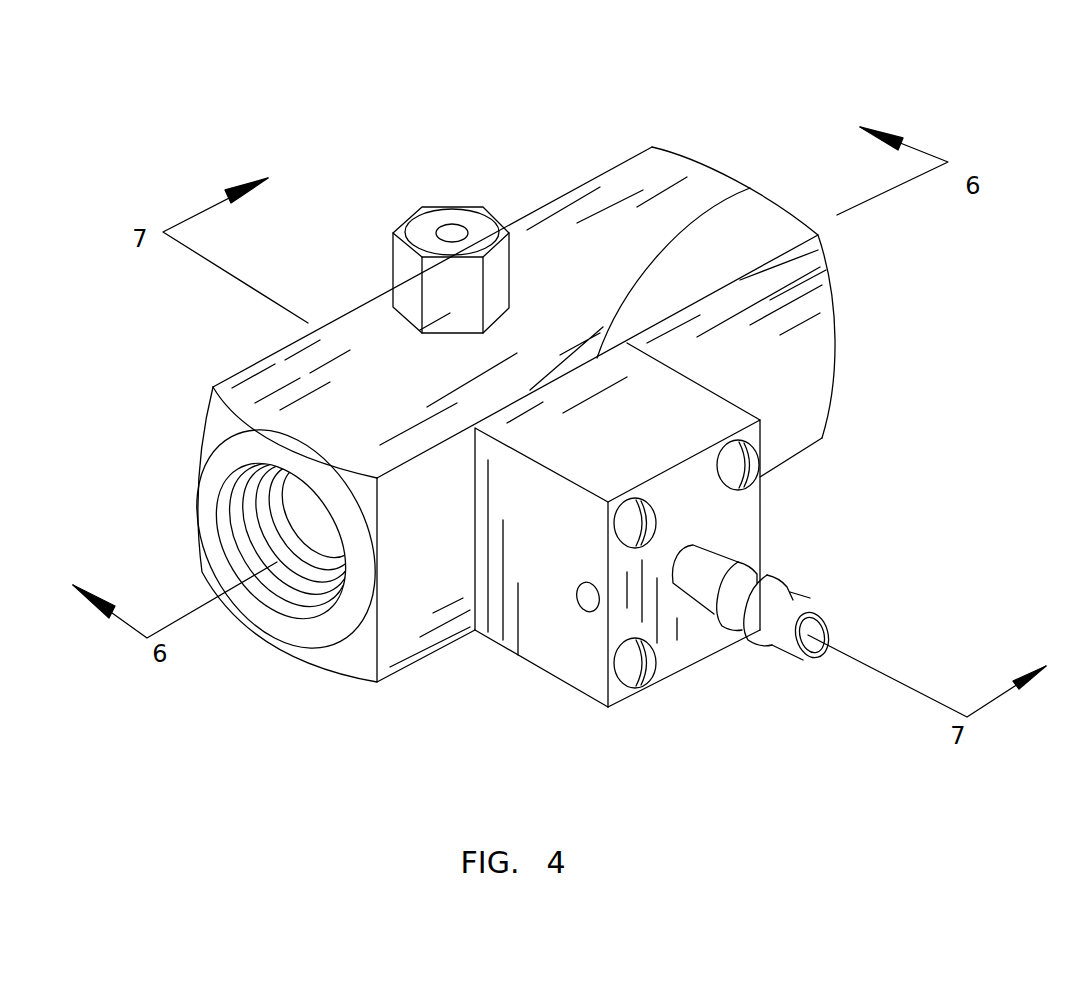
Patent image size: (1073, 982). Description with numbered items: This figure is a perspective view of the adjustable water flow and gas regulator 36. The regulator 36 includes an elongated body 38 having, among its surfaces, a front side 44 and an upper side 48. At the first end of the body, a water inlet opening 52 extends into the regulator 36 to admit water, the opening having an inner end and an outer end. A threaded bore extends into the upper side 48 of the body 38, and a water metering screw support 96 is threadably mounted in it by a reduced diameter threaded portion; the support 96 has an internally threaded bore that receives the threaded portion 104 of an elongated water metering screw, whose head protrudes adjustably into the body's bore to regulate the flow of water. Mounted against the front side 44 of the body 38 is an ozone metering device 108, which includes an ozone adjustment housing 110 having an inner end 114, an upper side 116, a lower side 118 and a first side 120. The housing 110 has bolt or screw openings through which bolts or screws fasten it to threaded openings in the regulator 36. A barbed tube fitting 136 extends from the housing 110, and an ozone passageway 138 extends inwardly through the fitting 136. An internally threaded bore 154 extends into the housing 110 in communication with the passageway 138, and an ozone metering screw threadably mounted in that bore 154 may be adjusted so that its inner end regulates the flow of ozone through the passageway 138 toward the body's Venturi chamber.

The elongated body 38 is at (655, 130).
The regulator 36 is at (757, 148).
The upper side 48 is at (580, 286).
The front side 44 is at (768, 393).
The inner end 114 is at (750, 188).
The water metering screw support 96 is at (440, 197).
The threaded portion 104 is at (452, 232).
The water inlet opening 52 is at (280, 612).
The upper side 116 is at (590, 455).
The first side 120 is at (517, 632).
The lower side 118 is at (613, 730).
The ozone adjustment housing 110 is at (748, 537).
The internally threaded bore 154 is at (580, 607).
The ozone metering device 108 is at (782, 498).
The barbed tube fitting 136 is at (765, 612).
The ozone passageway 138 is at (812, 632).